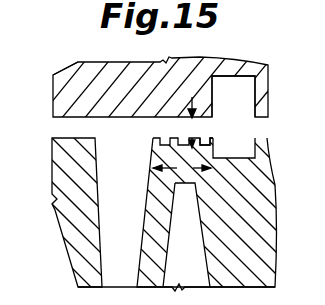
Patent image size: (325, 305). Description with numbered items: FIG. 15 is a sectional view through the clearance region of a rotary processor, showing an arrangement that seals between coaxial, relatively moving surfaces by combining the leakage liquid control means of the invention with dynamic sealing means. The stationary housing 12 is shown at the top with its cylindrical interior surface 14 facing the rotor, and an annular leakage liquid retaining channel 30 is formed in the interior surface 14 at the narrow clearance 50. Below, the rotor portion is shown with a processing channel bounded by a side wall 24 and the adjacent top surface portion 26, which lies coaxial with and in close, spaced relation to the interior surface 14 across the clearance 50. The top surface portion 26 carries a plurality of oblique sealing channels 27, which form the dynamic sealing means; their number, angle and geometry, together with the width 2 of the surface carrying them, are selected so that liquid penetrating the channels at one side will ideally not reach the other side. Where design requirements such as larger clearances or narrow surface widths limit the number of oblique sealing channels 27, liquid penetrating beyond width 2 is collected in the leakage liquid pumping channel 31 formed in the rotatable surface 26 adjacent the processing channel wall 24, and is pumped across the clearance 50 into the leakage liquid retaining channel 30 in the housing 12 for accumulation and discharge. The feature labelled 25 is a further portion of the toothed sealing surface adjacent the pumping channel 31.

The housing 12 is at (97, 59).
The cylindrical interior surface 14 is at (60, 121).
The leakage liquid retaining channel 30 is at (238, 85).
The clearance 50 is at (196, 126).
The oblique sealing channels 27 is at (199, 136).
The tooth 25 is at (212, 143).
The leakage liquid pumping channel 31 is at (230, 153).
The top surface portions 26 is at (153, 136).
The side walls 24 is at (147, 212).
The dimension 2 is at (182, 171).